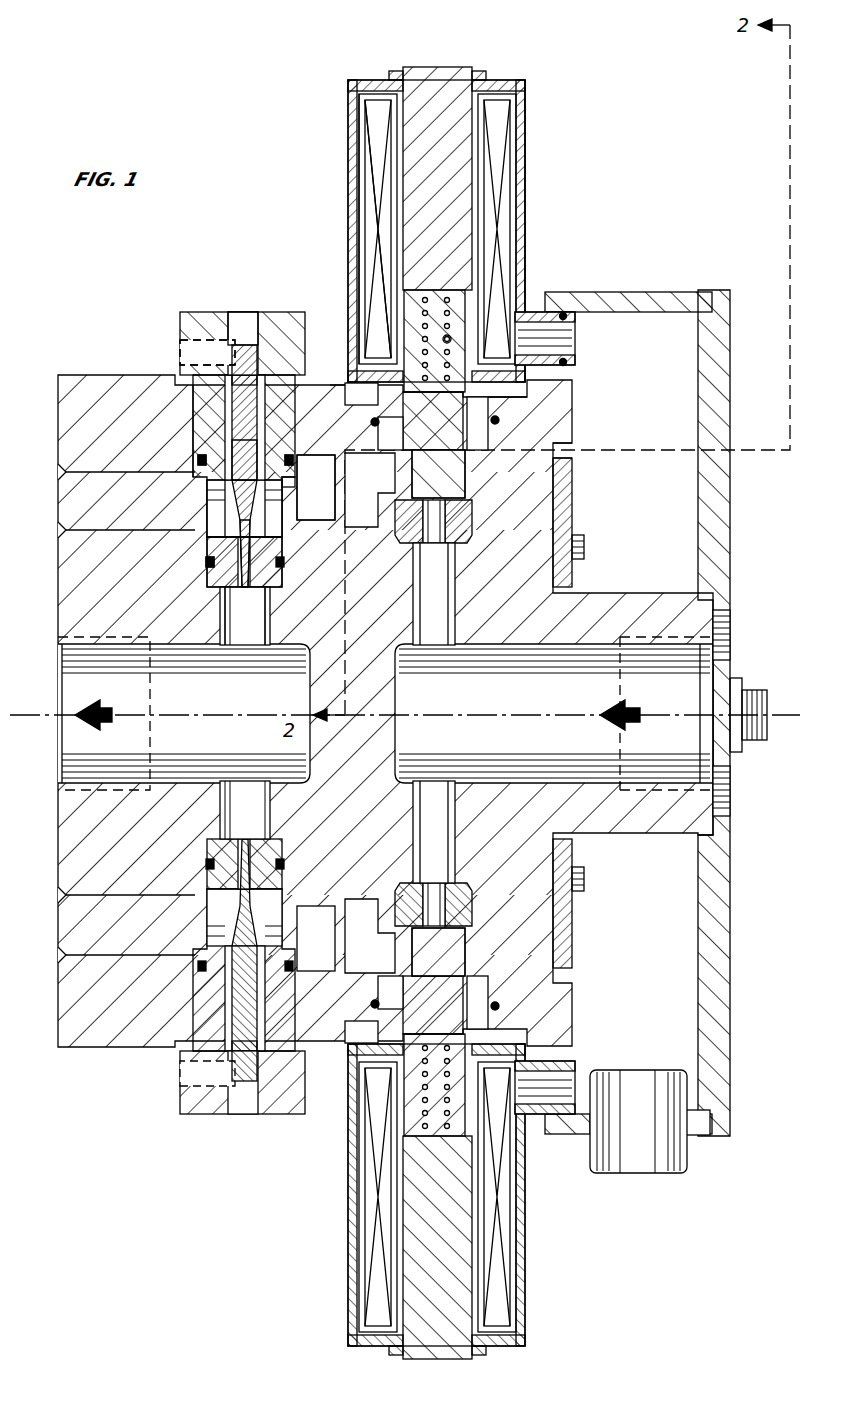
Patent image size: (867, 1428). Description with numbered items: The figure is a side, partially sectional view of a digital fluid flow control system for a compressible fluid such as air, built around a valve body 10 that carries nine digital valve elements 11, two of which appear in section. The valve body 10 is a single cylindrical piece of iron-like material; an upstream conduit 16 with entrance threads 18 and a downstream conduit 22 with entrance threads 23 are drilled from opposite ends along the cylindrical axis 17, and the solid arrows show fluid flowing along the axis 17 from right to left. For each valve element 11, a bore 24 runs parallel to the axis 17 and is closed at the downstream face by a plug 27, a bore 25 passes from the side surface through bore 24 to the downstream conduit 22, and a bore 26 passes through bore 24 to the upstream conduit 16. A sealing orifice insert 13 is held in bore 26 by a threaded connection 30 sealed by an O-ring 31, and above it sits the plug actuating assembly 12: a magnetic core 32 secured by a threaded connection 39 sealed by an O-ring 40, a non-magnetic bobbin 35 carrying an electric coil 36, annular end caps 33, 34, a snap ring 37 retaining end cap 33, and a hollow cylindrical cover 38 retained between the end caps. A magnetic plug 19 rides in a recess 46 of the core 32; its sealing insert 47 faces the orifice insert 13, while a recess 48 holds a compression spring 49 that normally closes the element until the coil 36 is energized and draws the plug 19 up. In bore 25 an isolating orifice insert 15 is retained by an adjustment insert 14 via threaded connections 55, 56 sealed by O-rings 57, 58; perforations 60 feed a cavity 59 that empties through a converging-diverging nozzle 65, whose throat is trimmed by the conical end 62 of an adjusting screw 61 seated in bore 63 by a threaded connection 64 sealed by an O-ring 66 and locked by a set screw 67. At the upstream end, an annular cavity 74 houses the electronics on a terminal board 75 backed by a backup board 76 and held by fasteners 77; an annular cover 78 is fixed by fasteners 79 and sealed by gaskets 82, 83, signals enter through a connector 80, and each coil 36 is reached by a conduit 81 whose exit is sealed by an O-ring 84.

The valve body 10 is at (62, 375).
The digital valve element 11 is at (338, 310).
The plug actuating assembly 12 is at (555, 100).
The sealing orifice insert 13 is at (480, 540).
The adjustment insert 14 is at (240, 312).
The isolating orifice insert 15 is at (255, 585).
The upstream conduit 16 is at (555, 783).
The cylindrical axis 17 is at (598, 715).
The threads 18 is at (683, 783).
The plug 19 is at (440, 305).
The downstream conduit 22 is at (218, 783).
The threads 23 is at (125, 783).
The bore 24 is at (297, 515).
The bore 25 is at (292, 455).
The bore 26 is at (545, 475).
The plug 27 is at (60, 500).
The threaded connection 30 is at (418, 590).
The O-ring 31 is at (405, 548).
The core 32 is at (430, 67).
The end cap 33 is at (525, 85).
The end cap 34 is at (335, 385).
The bobbin 35 is at (385, 85).
The electric coil 36 is at (372, 135).
The snap ring 37 is at (482, 75).
The cover 38 is at (352, 190).
The threaded connection 39 is at (370, 713).
The O-ring 40 is at (500, 425).
The recess 46 is at (470, 398).
The sealing insert 47 is at (400, 505).
The recess 48 is at (545, 713).
The compression spring 49 is at (465, 292).
The threaded connection 55 is at (272, 560).
The threaded connection 56 is at (192, 415).
The O-ring 57 is at (208, 566).
The O-ring 58 is at (198, 457).
The cavity 59 is at (270, 540).
The perforations 60 is at (215, 520).
The adjusting screw 61 is at (258, 432).
The conical end 62 is at (240, 600).
The bore 63 is at (258, 315).
The threaded connection 64 is at (256, 350).
The converging-diverging nozzle 65 is at (262, 600).
The O-ring 66 is at (290, 477).
The set screw 67 is at (200, 360).
The annular cavity 74 is at (575, 445).
The terminal board 75 is at (572, 495).
The backup board 76 is at (565, 968).
The fastener 77 is at (584, 549).
The cover 78 is at (731, 530).
The fastener 79 is at (750, 740).
The connector 80 is at (690, 1170).
The conduit 81 is at (575, 365).
The gasket 82 is at (712, 295).
The gasket 83 is at (725, 600).
The O-ring 84 is at (565, 312).